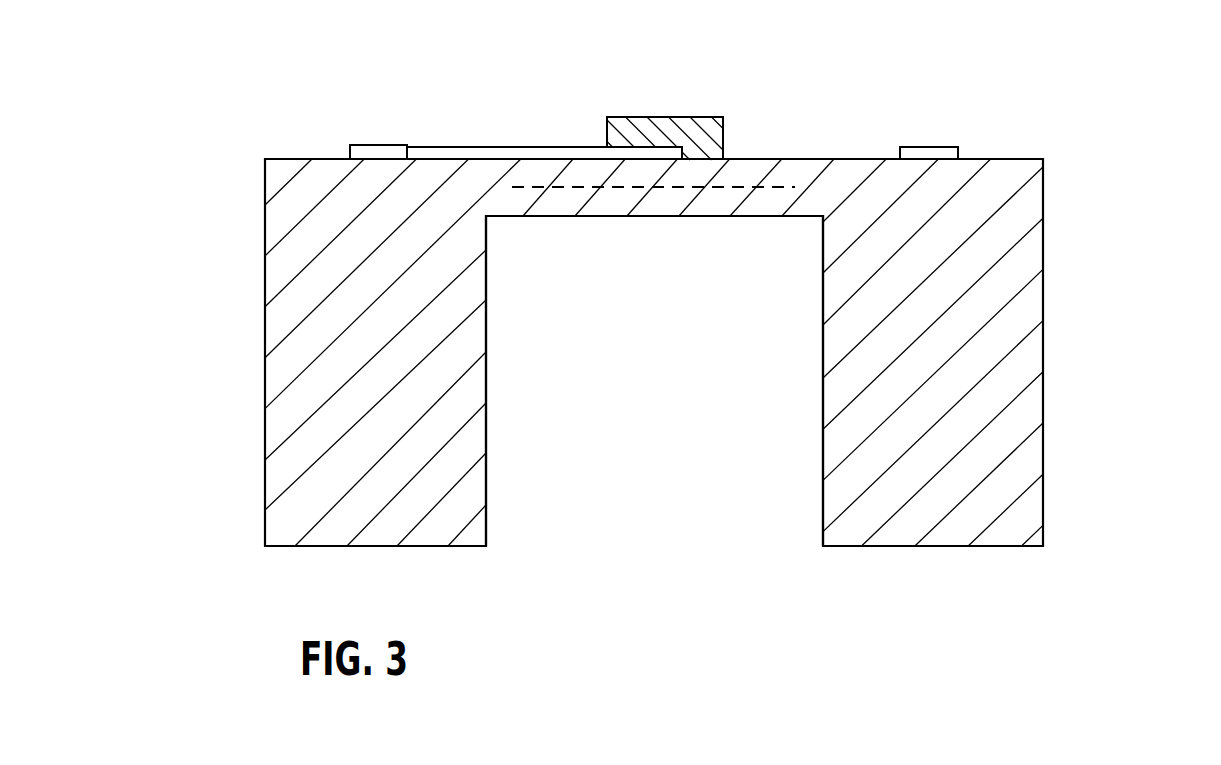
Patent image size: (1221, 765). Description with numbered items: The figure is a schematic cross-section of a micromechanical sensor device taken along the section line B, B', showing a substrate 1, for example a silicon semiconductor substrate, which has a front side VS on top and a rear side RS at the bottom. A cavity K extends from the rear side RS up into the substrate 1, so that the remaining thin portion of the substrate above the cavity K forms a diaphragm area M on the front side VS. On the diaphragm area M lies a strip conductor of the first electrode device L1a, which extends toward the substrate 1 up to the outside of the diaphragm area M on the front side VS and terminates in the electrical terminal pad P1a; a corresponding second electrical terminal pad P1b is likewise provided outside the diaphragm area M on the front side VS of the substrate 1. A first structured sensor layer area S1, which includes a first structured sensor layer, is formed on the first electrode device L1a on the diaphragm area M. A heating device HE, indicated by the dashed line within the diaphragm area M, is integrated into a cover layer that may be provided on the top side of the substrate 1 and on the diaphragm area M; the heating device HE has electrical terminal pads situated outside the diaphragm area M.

The substrate 1 is at (1045, 159).
The front side VS is at (283, 158).
The rear side RS is at (999, 549).
The cavity K is at (658, 423).
The diaphragm area M is at (740, 218).
The heating device HE is at (617, 188).
The electrical terminal pad P1a is at (373, 145).
The first electrode device L1a is at (492, 147).
The first structured sensor layer area S1 is at (662, 117).
The electrical terminal pad P1b is at (930, 147).
The section line B-B' B is at (132, 307).
The section line B- B' is at (1191, 313).